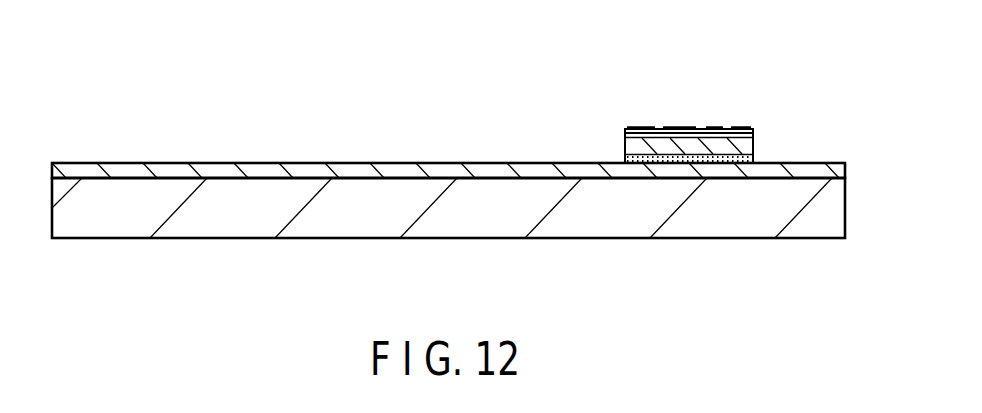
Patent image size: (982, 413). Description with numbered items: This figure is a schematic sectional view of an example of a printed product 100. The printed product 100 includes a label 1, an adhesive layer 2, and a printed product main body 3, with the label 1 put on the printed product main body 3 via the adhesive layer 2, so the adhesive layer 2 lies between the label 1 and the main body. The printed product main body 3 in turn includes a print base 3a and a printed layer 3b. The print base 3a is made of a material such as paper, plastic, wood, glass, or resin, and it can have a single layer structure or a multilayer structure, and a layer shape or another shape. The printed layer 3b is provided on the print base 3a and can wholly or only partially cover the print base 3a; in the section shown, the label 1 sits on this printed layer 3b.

The printed product 100 is at (778, 87).
The label 1 is at (618, 132).
The adhesive layer 2 is at (753, 158).
The printed product main body 3 is at (120, 158).
The print base 3a is at (240, 226).
The printed layer 3b is at (273, 172).